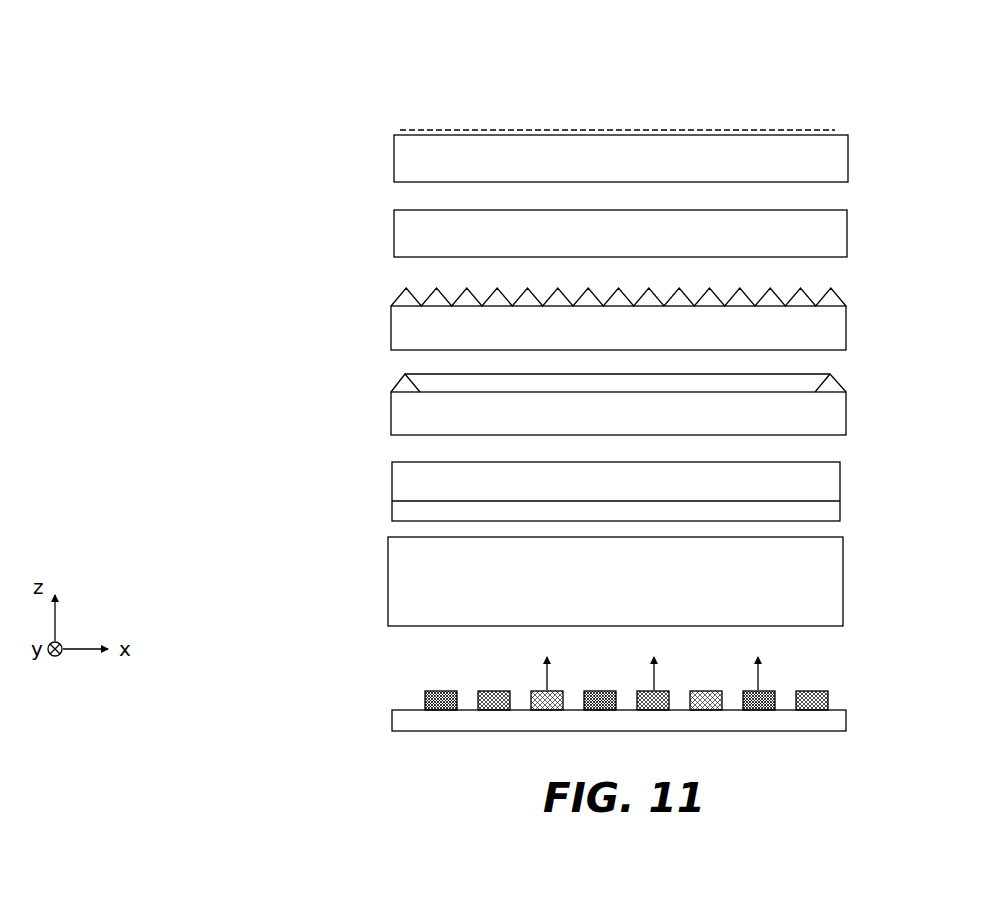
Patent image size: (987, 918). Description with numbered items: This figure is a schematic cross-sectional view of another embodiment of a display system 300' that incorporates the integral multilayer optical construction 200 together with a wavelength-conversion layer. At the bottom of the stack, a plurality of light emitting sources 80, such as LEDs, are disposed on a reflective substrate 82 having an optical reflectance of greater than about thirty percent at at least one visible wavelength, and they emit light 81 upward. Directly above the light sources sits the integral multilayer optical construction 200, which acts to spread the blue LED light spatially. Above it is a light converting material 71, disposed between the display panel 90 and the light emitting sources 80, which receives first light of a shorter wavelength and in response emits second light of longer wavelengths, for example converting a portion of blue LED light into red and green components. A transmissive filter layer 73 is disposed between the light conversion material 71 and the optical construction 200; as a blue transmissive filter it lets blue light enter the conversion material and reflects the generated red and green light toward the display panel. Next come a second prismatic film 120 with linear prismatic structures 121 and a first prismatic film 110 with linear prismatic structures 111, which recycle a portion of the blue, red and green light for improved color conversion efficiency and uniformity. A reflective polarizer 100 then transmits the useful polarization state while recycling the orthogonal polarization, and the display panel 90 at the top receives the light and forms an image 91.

The display system 300' is at (589, 389).
The display panel 90 is at (837, 158).
The image 91 is at (822, 130).
The reflective polarizer 100 is at (832, 232).
The first prismatic film 110 is at (622, 305).
The linear prismatic structures 111 is at (403, 297).
The second prismatic film 120 is at (621, 396).
The linear prismatic structures 121 is at (405, 383).
The light converting material 71 is at (554, 517).
The transmissive filter layer 73 is at (395, 515).
The integral multilayer optical construction 200 is at (441, 615).
The light emitting sources 80 is at (425, 697).
The emitted light 81 is at (758, 676).
The reflective substrate 82 is at (407, 723).